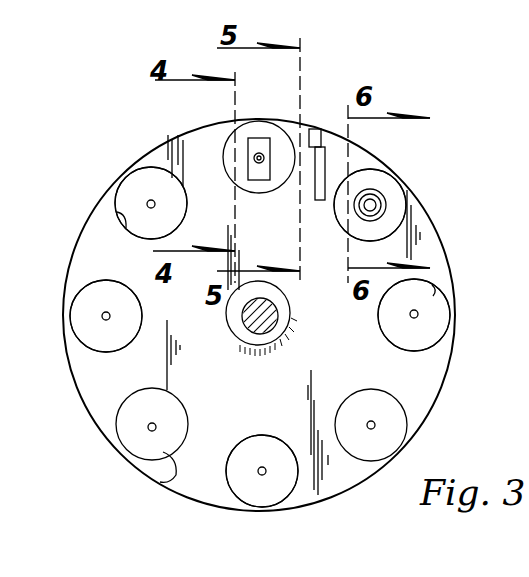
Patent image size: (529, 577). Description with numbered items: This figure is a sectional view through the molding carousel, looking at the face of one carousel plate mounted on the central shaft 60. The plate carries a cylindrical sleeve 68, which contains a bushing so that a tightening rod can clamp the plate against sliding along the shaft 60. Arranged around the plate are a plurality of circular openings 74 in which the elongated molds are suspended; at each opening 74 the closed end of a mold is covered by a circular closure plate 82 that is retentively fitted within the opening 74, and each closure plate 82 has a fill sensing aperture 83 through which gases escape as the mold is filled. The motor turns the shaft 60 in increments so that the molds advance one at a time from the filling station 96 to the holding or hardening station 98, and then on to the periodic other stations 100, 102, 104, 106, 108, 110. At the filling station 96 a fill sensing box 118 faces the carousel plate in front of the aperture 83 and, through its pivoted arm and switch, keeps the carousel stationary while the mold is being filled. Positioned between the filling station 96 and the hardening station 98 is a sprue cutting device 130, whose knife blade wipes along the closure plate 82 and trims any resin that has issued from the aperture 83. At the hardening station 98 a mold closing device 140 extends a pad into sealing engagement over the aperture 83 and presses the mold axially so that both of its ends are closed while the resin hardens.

The shaft 60 is at (270, 330).
The cylindrical sleeve 68 is at (266, 346).
The circular opening 74 is at (117, 212).
The closure plate 82 is at (85, 294).
The aperture 83 is at (151, 198).
The filling station 96 is at (285, 114).
The hardening station 98 is at (424, 193).
The station 100 is at (464, 314).
The station 102 is at (415, 442).
The station 104 is at (248, 525).
The station 106 is at (98, 444).
The station 108 is at (56, 314).
The station 110 is at (96, 187).
The fill sensing box 118 is at (257, 138).
The sprue cutting device 130 is at (314, 128).
The mold closing device 140 is at (373, 196).